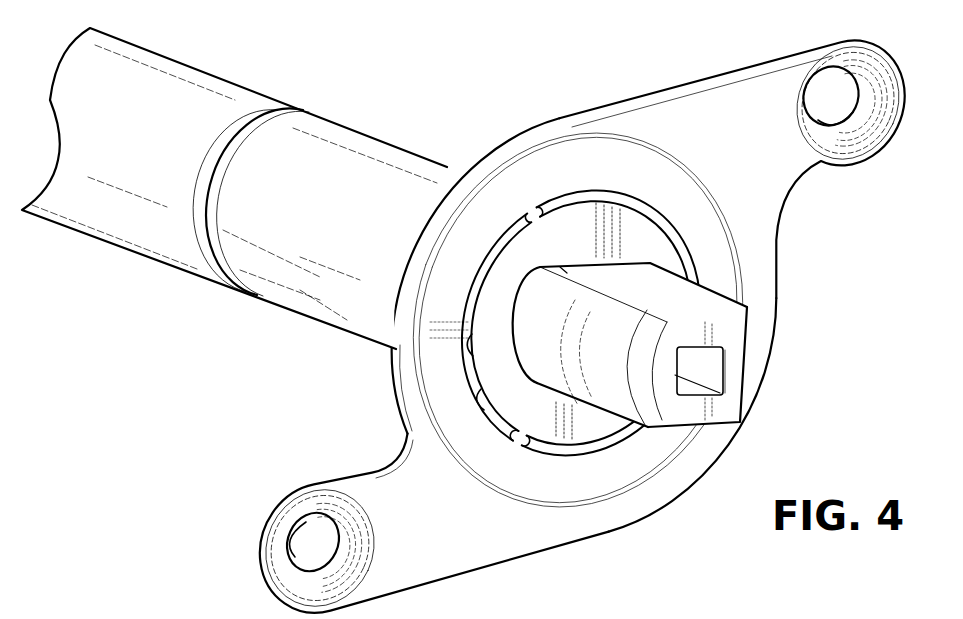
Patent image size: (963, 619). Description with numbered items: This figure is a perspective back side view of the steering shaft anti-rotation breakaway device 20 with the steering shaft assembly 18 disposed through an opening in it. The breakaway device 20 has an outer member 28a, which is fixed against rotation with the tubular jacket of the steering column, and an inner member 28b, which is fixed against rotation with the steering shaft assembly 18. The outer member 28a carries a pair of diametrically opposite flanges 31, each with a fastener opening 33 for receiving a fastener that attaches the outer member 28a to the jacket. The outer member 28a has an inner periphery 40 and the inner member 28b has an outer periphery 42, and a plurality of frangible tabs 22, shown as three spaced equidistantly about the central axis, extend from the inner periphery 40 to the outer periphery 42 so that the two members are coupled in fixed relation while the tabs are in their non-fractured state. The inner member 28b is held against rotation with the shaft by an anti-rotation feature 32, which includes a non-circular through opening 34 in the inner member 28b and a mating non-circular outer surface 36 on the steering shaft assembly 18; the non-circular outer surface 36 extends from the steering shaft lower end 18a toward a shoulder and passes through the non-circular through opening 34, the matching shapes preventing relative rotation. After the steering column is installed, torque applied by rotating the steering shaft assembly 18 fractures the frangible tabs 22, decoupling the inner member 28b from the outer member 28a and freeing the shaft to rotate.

The steering shaft assembly 18 is at (717, 292).
The steering shaft lower end 18a is at (738, 375).
The breakaway device 20 is at (583, 99).
The frangible tab 22 is at (530, 212).
The outer member 28a is at (578, 527).
The inner member 28b is at (648, 227).
The flange 31 is at (793, 50).
The anti-rotation feature 32 is at (576, 240).
The fastener opening 33 is at (848, 113).
The non-circular through opening 34 is at (561, 274).
The non-circular outer surface 36 is at (660, 284).
The inner periphery 40 is at (470, 347).
The outer periphery 42 is at (480, 399).